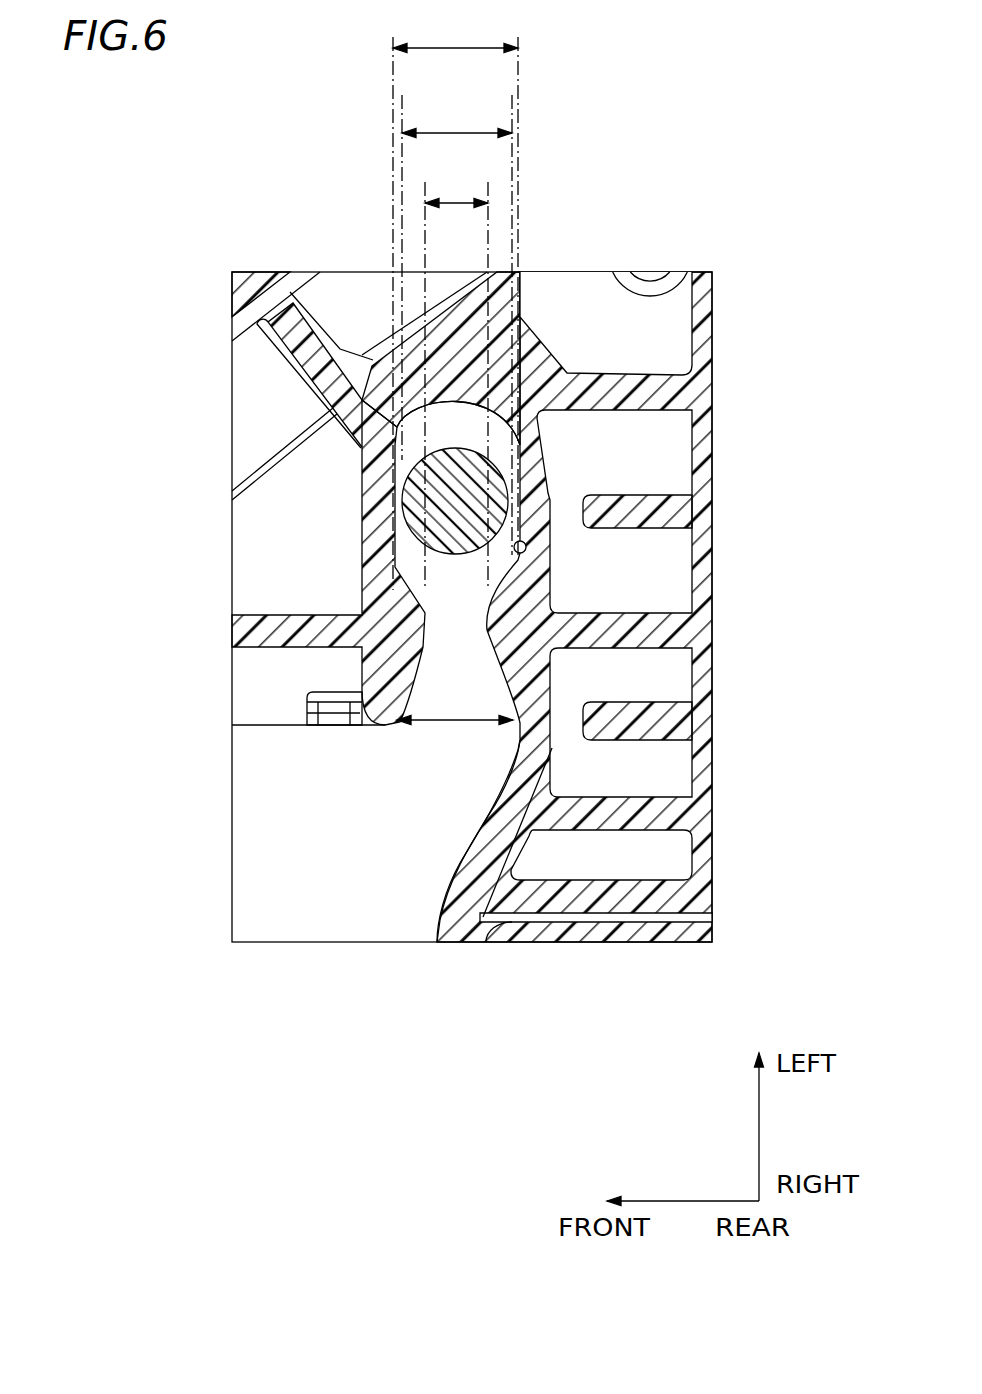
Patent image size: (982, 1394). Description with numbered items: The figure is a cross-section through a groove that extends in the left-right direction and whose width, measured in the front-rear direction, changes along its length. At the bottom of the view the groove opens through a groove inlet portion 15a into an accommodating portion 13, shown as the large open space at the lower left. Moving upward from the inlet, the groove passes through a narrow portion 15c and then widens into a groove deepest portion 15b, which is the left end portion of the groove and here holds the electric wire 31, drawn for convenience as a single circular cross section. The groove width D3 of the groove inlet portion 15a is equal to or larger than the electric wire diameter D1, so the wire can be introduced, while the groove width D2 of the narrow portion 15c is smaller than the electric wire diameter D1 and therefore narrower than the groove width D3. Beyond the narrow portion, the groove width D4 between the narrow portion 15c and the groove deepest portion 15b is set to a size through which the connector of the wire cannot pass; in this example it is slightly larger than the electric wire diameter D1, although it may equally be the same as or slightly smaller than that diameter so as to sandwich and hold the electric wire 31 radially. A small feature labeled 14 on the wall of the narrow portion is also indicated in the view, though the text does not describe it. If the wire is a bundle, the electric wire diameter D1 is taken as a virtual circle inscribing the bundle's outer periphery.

The accommodating portion 13 is at (300, 848).
The notch 14 is at (507, 542).
The groove inlet portion 15a is at (455, 708).
The groove deepest portion 15b is at (460, 430).
The narrow portion 15c is at (455, 627).
The electric wire 31 is at (410, 518).
The electric wire diameter D1 is at (457, 325).
The groove width of the narrow portion D2 is at (456, 379).
The groove width of the groove inlet portion D3 is at (455, 740).
The groove width between the narrow portion and the groove deepest portion D4 is at (455, 302).